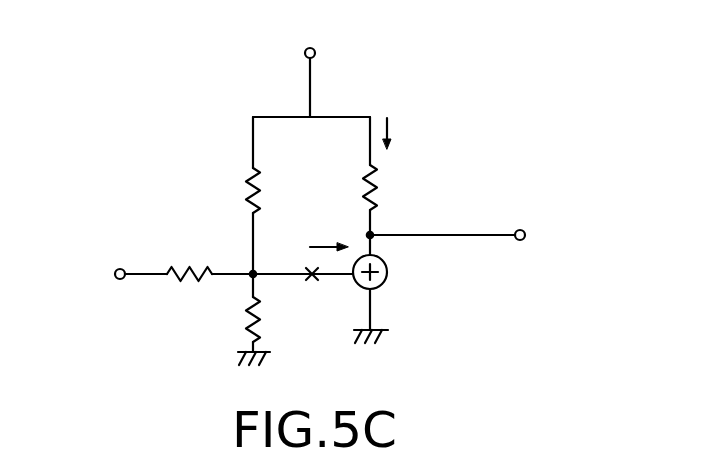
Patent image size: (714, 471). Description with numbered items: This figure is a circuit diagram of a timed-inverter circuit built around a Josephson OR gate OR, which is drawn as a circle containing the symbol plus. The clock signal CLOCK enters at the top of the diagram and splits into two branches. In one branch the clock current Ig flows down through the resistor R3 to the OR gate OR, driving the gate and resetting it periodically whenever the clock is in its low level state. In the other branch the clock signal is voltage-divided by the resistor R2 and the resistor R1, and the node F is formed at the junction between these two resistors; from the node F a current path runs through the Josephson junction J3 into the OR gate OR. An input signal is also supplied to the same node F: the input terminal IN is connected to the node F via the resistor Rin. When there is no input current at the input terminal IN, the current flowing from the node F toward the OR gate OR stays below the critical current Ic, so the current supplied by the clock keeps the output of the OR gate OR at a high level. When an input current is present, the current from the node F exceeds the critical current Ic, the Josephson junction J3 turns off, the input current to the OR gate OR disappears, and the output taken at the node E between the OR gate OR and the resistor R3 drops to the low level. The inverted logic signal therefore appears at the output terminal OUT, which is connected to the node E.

The clock signal CLOCK is at (312, 65).
The resistor R2 is at (236, 195).
The resistor R3 is at (388, 186).
The clock current Ig is at (405, 134).
The node E is at (375, 232).
The output terminal OUT is at (484, 237).
The OR gate OR is at (387, 277).
The critical current Ic is at (328, 233).
The node F is at (256, 272).
The Josephson junction J3 is at (303, 298).
The input terminal IN is at (118, 274).
The resistor Rin is at (210, 256).
The resistor R1 is at (238, 319).